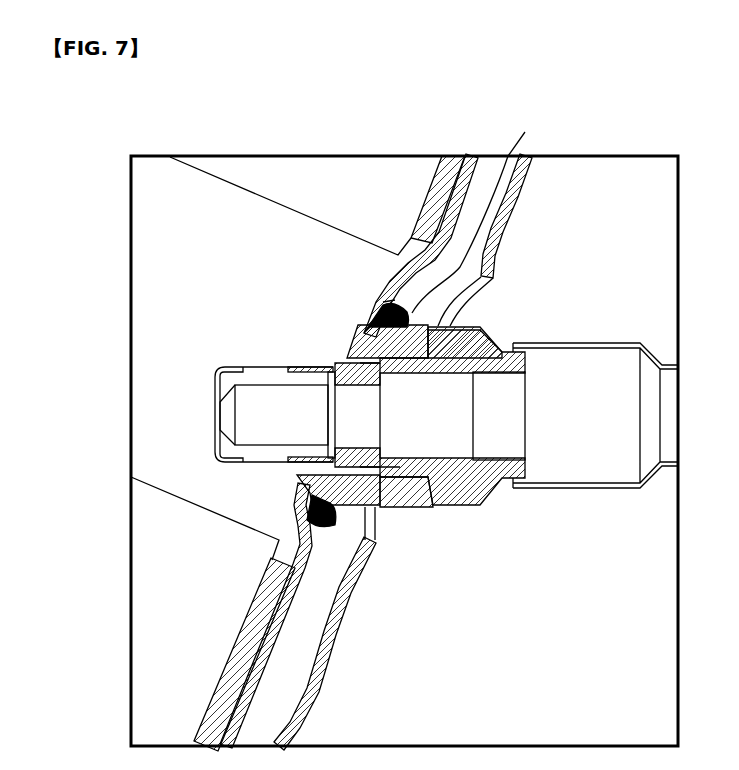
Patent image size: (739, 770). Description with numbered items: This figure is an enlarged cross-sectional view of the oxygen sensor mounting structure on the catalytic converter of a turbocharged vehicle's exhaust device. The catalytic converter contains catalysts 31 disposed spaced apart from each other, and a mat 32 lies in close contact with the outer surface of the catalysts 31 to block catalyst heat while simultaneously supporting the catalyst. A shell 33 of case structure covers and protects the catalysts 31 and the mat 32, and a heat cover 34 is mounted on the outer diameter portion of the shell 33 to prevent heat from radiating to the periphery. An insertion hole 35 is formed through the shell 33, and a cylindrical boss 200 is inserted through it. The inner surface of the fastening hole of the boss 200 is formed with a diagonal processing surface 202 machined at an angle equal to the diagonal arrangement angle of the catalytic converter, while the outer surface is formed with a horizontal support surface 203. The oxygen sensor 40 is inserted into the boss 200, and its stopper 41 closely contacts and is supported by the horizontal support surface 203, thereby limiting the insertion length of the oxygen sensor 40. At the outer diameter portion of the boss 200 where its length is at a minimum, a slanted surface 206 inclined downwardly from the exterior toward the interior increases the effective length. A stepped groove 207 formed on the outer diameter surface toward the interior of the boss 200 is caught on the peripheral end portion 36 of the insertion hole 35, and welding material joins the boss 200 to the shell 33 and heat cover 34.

The catalyst 31 is at (288, 182).
The mat 32 is at (457, 156).
The shell 33 is at (398, 262).
The heat cover 34 is at (497, 235).
The insertion hole 35 is at (357, 333).
The peripheral end portion 36 is at (383, 302).
The oxygen sensor 40 is at (205, 413).
The stopper 41 is at (467, 508).
The boss 200 is at (407, 520).
The diagonal processing surface 202 is at (347, 343).
The horizontal support surface 203 is at (425, 325).
The slanted surface 206 is at (440, 318).
The stepped groove 207 is at (297, 477).